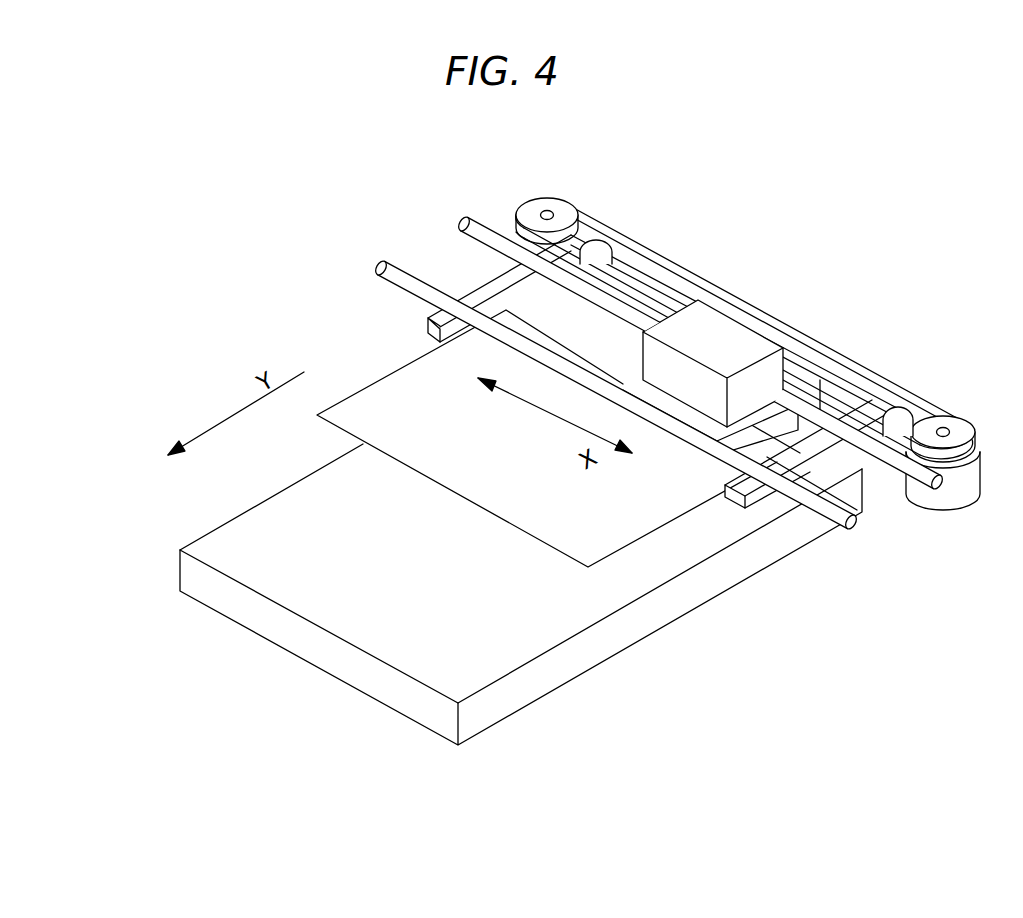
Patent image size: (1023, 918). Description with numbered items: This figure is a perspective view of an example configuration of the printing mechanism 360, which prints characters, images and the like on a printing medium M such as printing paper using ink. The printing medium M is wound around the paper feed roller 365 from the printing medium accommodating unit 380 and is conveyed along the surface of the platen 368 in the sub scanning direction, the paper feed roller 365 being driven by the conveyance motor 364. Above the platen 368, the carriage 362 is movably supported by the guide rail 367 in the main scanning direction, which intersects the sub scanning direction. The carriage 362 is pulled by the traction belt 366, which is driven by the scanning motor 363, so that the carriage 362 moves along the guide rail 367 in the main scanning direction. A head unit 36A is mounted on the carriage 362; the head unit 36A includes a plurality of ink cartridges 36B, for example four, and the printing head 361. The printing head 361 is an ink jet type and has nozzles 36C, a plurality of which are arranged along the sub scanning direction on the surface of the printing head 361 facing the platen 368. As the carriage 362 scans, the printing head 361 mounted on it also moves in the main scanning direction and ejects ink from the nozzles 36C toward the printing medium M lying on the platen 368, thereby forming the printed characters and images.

The printing mechanism 360 is at (692, 362).
The printing head 361 is at (795, 331).
The head unit 36A is at (795, 331).
The ink cartridge 36B is at (795, 331).
The nozzle 36C is at (710, 318).
The carriage 362 is at (687, 413).
The scanning motor 363 is at (947, 503).
The conveyance motor 364 is at (765, 330).
The paper feed roller 365 is at (885, 400).
The traction belt 366 is at (650, 252).
The guide rail 367 is at (457, 224).
The platen 368 is at (745, 488).
The printing medium accommodating unit 380 is at (625, 630).
The printing medium M is at (387, 398).